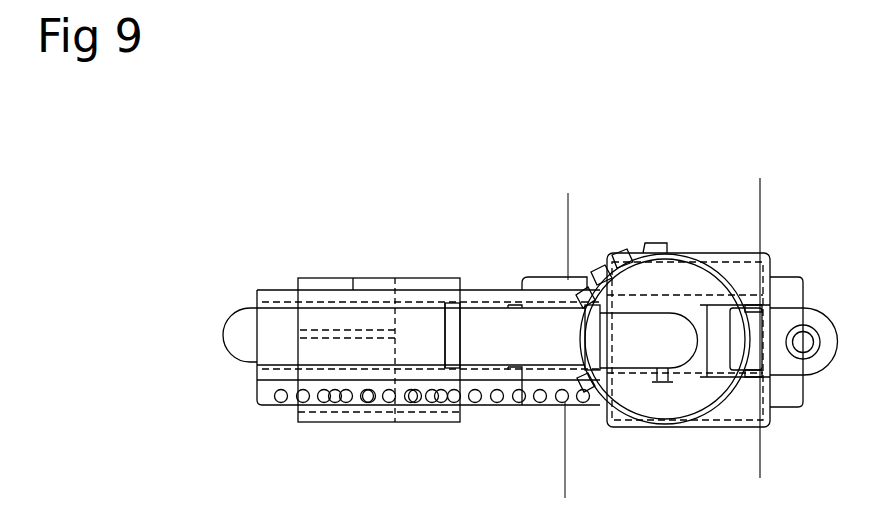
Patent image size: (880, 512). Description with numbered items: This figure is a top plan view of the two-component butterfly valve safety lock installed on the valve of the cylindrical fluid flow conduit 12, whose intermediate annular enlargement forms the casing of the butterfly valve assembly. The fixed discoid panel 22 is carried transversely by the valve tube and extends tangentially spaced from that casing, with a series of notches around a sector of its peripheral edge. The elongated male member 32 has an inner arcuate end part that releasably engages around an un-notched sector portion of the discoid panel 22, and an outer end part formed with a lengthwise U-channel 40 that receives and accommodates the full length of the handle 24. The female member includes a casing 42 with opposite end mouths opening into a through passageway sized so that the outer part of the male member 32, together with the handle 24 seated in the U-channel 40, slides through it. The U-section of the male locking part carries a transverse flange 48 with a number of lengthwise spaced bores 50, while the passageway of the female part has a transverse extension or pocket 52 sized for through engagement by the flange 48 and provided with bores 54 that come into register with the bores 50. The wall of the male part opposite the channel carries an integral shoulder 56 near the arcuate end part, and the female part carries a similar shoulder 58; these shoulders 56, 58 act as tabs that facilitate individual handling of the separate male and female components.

The cylindrical fluid flow conduit 12 is at (755, 235).
The fixed discoid panel 22 is at (650, 242).
The handle 24 is at (222, 332).
The male member 32 is at (283, 323).
The U-channel 40 is at (262, 310).
The casing 42 is at (422, 318).
The transverse flange 48 is at (236, 467).
The bores 50 is at (257, 398).
The pocket 52 is at (362, 417).
The bores 54 is at (437, 398).
The shoulder 56 is at (585, 322).
The shoulder 58 is at (452, 320).